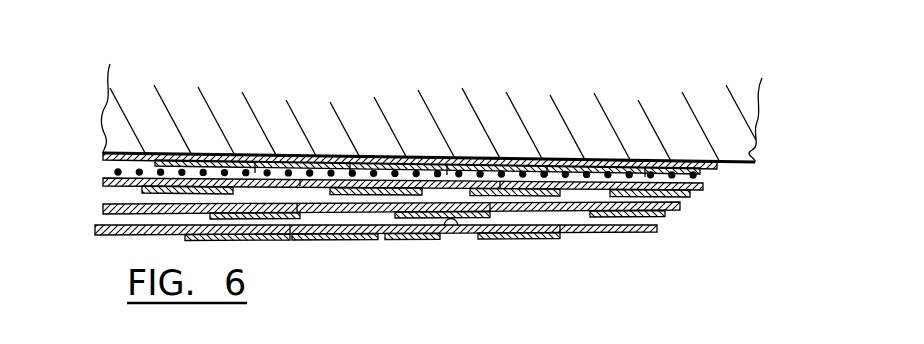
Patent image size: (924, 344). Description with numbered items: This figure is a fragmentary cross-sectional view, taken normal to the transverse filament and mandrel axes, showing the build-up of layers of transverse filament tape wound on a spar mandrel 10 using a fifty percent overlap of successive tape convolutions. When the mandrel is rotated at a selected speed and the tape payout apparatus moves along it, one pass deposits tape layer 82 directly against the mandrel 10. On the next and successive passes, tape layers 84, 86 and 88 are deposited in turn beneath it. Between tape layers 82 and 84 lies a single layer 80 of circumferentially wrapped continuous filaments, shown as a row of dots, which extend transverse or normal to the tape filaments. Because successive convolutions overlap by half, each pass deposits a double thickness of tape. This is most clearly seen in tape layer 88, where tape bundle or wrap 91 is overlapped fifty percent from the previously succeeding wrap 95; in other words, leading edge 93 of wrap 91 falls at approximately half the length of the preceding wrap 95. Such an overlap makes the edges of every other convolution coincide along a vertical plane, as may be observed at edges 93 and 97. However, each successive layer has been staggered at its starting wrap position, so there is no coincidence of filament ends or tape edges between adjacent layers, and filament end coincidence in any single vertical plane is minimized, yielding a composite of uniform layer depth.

The spar mandrel 10 is at (758, 91).
The tape layer 82 is at (717, 165).
The single layer of circumferentially wrapped continuous filaments 80 is at (700, 174).
The tape layer 84 is at (705, 185).
The tape layer 86 is at (680, 204).
The tape layer 88 is at (657, 227).
The preceding tape wrap 95 is at (376, 236).
The tape edge 97 is at (442, 232).
The leading edge 93 is at (467, 239).
The tape bundle or wrap 91 is at (560, 237).